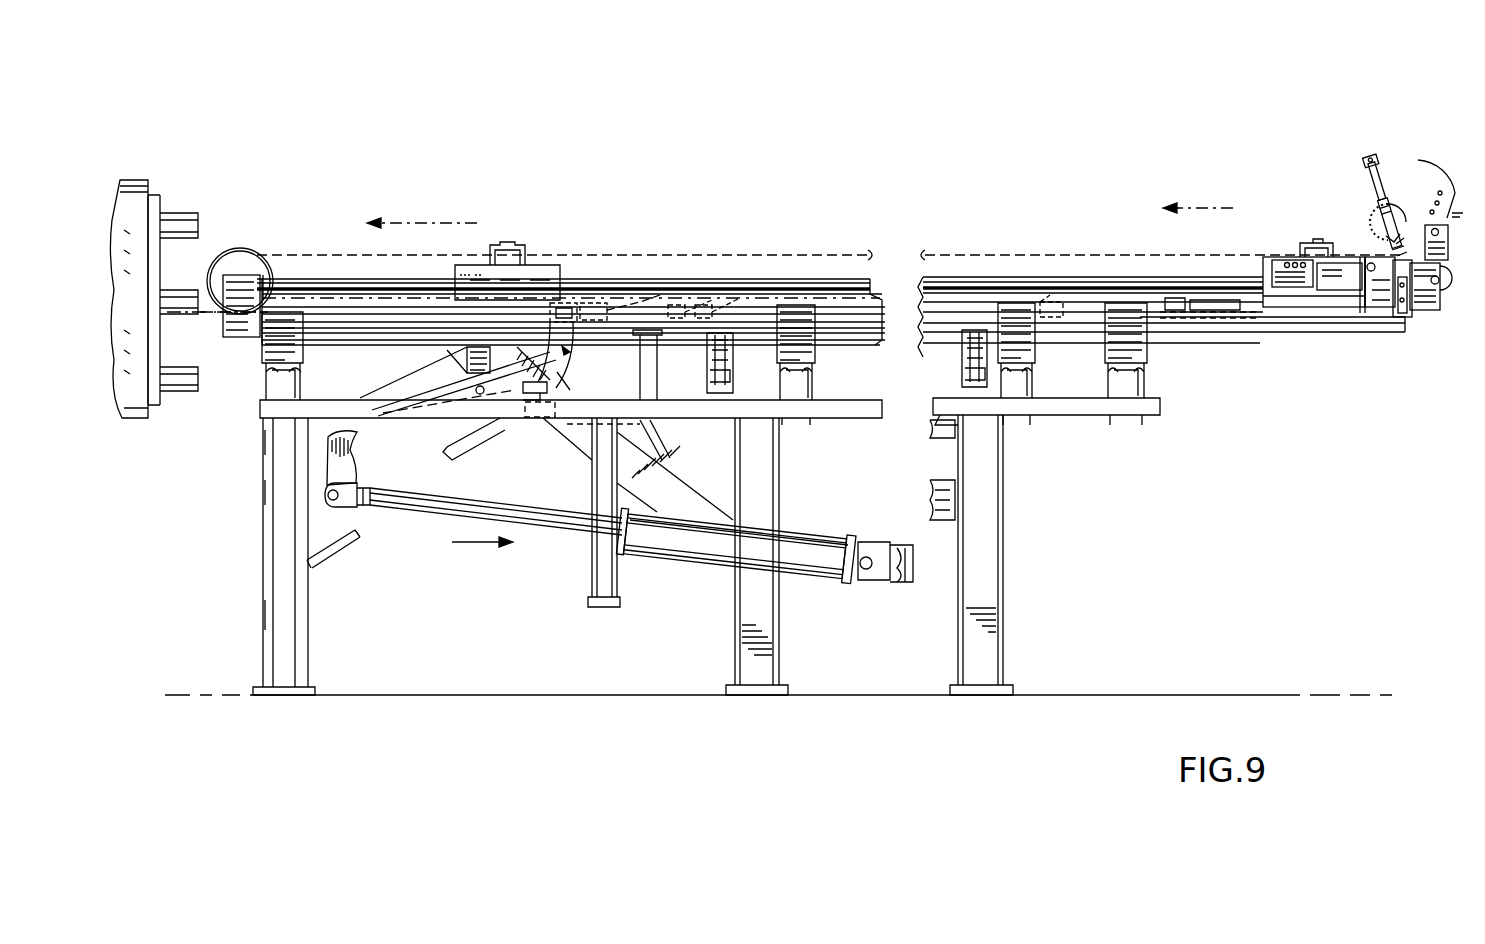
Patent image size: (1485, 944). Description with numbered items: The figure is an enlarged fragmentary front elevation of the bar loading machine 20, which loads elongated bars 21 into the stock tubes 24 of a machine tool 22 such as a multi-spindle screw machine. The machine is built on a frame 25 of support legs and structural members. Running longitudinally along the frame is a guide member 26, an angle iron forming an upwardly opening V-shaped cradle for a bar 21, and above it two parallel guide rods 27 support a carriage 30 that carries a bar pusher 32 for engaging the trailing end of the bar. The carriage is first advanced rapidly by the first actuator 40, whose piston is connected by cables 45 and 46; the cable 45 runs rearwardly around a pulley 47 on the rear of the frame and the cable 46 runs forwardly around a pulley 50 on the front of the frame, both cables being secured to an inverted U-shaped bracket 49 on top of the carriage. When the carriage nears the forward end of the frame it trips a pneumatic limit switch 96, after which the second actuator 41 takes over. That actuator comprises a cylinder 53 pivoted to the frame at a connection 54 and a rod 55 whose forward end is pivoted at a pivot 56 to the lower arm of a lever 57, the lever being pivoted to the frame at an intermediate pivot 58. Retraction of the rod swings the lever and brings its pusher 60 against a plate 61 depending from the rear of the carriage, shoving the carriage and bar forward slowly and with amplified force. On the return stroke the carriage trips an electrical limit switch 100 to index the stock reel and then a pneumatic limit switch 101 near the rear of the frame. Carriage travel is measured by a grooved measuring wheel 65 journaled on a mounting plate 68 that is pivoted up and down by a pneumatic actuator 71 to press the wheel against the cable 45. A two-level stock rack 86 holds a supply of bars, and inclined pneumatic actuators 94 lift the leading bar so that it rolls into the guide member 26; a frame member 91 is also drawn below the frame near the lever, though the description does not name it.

The bar loading machine 20 is at (1008, 217).
The elongated bar 21 is at (208, 318).
The machine tool 22 is at (130, 190).
The stock tubes 24 is at (180, 295).
The frame 25 is at (1000, 530).
The guide member 26 is at (1260, 335).
The guide rods 27 is at (810, 285).
The carriage 30 is at (1306, 268).
The bar pusher 32 is at (1232, 310).
The first actuator 40 is at (1335, 302).
The second actuator 41 is at (663, 534).
The cable 45 is at (1372, 260).
The cable 46 is at (1072, 253).
The pulley 47 is at (1450, 293).
The inverted U-shaped bracket 49 is at (1300, 262).
The pulley 50 is at (233, 265).
The cylinder 53 is at (793, 540).
The pivotal connection 54 is at (883, 582).
The rod 55 is at (510, 522).
The pivot 56 is at (328, 497).
The lever 57 is at (362, 432).
The pivot 58 is at (478, 388).
The pusher 60 is at (600, 300).
The plate 61 is at (567, 300).
The measuring wheel 65 is at (1391, 196).
The mounting plate 68 is at (1416, 160).
The pneumatic actuator 71 is at (1443, 213).
The stock rack 86 is at (811, 379).
The column 91 is at (598, 585).
The pneumatic actuators 94 is at (640, 385).
The pneumatic limit switch 96 is at (657, 292).
The electrical limit switch 100 is at (732, 275).
The pneumatic limit switch 101 is at (1052, 318).